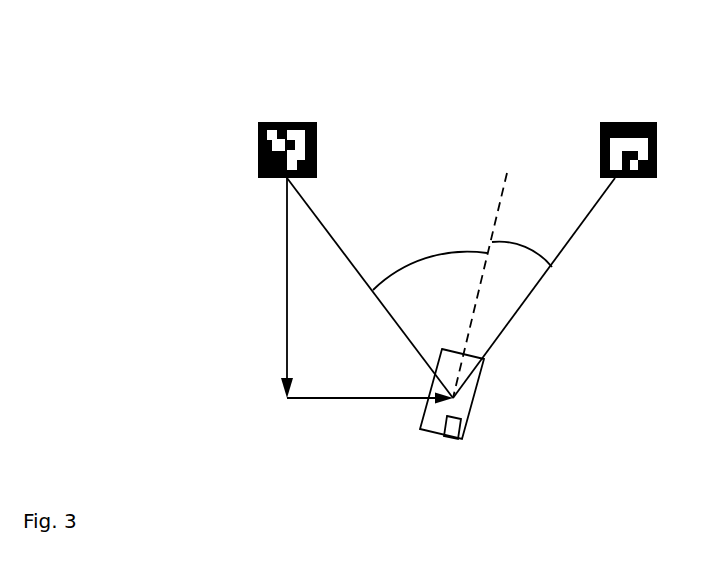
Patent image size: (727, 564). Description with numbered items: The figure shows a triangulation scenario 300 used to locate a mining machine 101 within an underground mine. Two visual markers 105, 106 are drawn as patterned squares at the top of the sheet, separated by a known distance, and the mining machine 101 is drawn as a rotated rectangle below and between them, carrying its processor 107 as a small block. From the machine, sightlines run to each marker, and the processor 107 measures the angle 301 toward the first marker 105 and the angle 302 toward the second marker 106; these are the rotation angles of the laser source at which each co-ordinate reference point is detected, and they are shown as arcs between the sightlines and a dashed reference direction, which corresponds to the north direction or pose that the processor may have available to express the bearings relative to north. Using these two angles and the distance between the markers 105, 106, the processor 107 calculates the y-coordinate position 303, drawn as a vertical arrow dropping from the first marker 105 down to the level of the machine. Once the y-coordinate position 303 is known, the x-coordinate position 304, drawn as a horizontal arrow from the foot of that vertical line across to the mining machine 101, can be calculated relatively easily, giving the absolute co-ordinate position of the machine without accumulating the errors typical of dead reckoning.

The triangulation scenario 300 is at (183, 63).
The marker 105 is at (287, 121).
The marker 106 is at (627, 122).
The mining machine 101 is at (472, 398).
The processor 107 is at (453, 439).
The angle 301 is at (423, 260).
The angle 302 is at (523, 245).
The y-coordinate position 303 is at (286, 288).
The x-coordinate position 304 is at (375, 399).